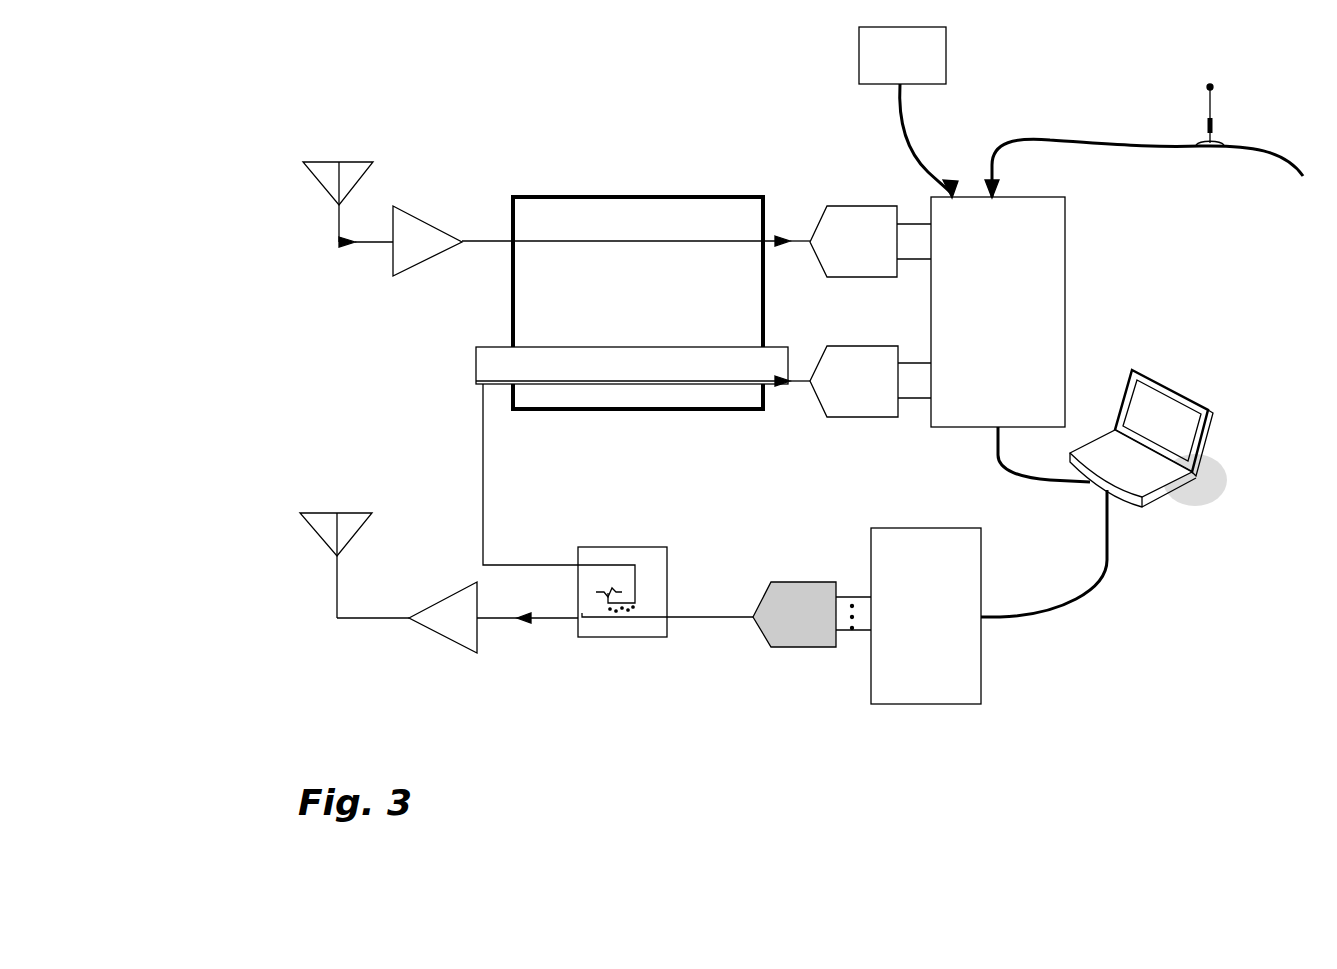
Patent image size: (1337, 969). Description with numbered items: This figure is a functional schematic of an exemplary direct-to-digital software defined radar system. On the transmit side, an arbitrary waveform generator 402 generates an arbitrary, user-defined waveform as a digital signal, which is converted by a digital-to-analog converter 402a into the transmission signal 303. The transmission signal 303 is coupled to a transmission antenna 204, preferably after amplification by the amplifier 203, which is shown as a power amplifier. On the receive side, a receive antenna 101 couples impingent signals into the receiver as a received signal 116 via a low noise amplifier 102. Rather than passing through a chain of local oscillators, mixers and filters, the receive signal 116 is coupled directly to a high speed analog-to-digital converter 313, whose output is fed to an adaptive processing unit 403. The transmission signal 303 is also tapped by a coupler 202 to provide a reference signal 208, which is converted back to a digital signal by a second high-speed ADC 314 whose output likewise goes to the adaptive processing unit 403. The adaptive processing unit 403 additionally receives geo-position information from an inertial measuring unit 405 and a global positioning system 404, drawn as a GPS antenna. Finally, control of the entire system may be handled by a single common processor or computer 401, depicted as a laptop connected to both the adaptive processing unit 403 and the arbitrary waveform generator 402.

The receive antenna 101 is at (312, 172).
The low noise amplifier 102 is at (393, 257).
The received signal 116 is at (480, 240).
The reference signal 208 is at (478, 438).
The high speed analog-to-digital converter (ADC1) 313 is at (838, 206).
The high-speed ADC 314 is at (817, 398).
The adaptive processing unit 403 is at (1065, 248).
The inertial measuring unit 405 is at (946, 55).
The global positioning system 404 is at (1157, 143).
The common processor or computer 401 is at (1190, 400).
The arbitrary waveform generator 402 is at (912, 705).
The digital-to-analog converter 402a is at (815, 690).
The transmission signal 303 is at (716, 610).
The coupler 202 is at (578, 640).
The amplifier 203 is at (432, 632).
The transmission antenna 204 is at (311, 530).